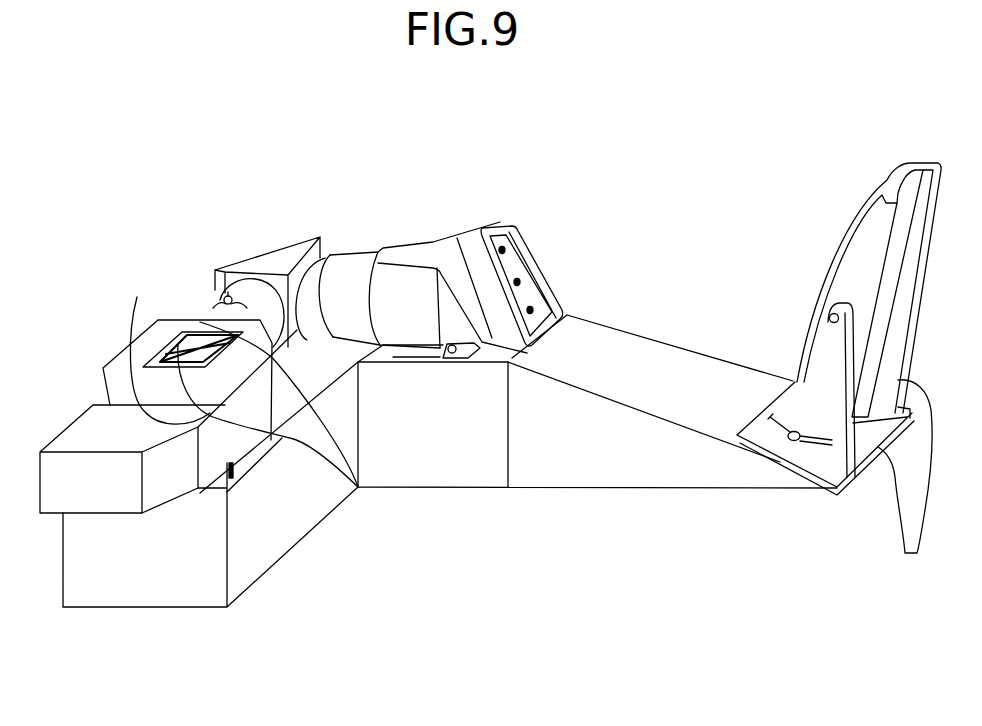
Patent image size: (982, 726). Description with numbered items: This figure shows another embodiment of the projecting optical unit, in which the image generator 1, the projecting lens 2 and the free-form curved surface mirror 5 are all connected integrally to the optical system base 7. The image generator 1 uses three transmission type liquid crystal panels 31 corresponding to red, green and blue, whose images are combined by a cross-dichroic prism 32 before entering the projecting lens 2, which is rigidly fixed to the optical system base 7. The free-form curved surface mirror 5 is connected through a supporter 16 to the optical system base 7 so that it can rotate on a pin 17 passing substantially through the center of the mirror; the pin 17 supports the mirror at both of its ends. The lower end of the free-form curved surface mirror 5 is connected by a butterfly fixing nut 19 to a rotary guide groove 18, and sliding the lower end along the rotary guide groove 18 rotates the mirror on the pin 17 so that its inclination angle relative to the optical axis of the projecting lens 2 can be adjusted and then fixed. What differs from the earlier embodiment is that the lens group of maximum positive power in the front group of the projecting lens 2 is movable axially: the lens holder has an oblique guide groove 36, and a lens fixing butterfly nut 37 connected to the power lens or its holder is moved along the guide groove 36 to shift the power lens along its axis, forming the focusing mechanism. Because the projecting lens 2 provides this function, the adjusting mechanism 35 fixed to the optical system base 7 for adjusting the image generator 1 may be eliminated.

The image generator 1 is at (137, 297).
The projecting lens 2 is at (352, 255).
The free-form curved surface mirror 5 is at (857, 223).
The optical system base 7 is at (305, 515).
The supporter 16 is at (907, 486).
The pin 17 is at (828, 309).
The rotary guide groove 18 is at (813, 443).
The butterfly fixing nut 19 is at (788, 443).
The transmission type liquid crystal panel 31 is at (358, 487).
The cross-dichroic prism 32 is at (193, 330).
The adjusting mechanism 35 is at (230, 480).
The oblique guide groove 36 is at (265, 270).
The lens fixing butterfly nut 37 is at (215, 290).